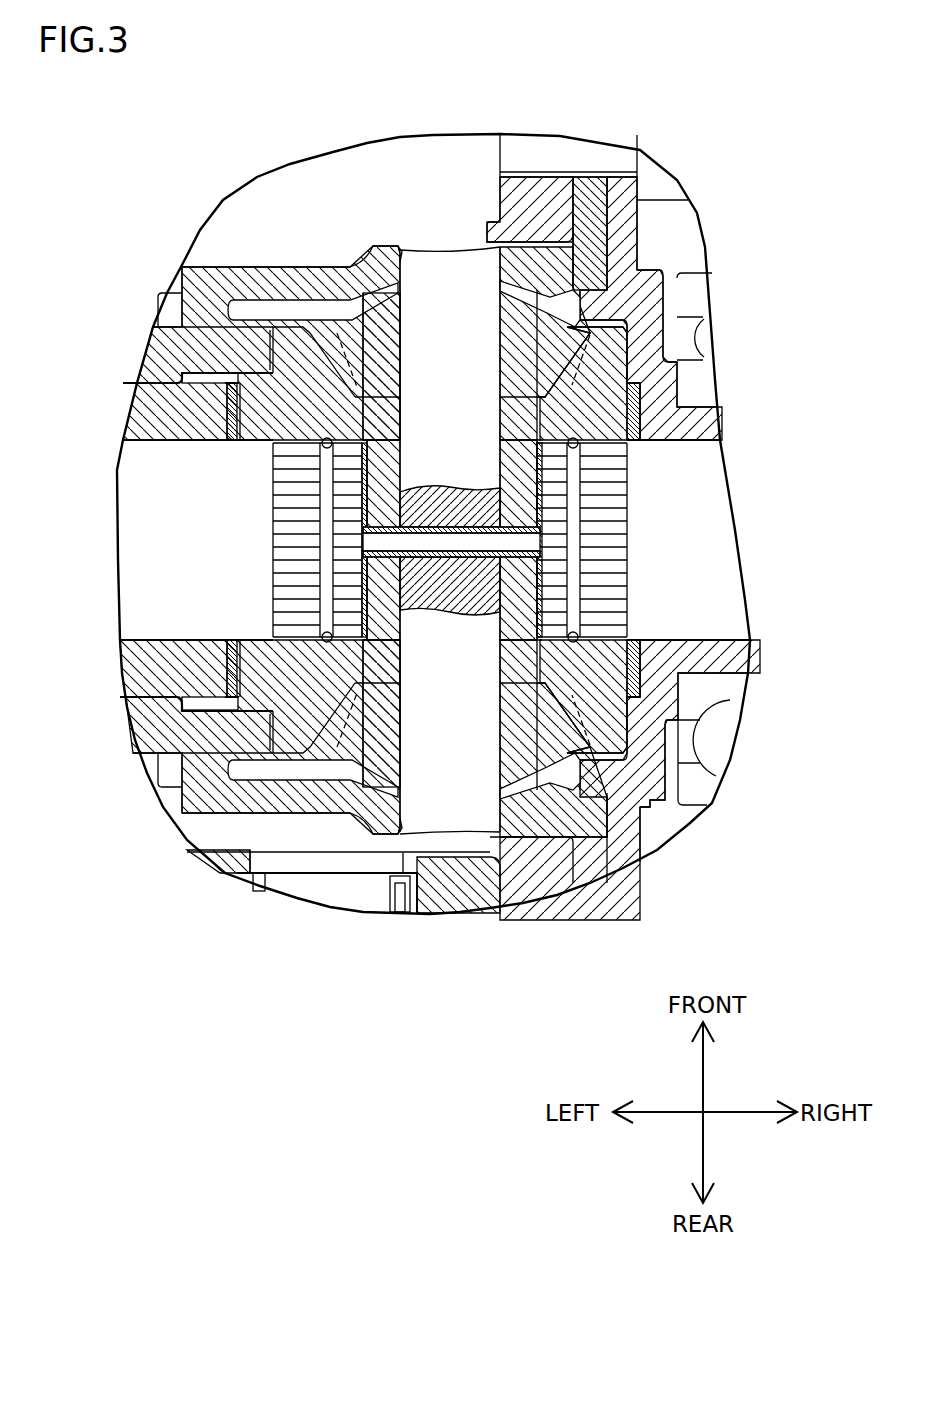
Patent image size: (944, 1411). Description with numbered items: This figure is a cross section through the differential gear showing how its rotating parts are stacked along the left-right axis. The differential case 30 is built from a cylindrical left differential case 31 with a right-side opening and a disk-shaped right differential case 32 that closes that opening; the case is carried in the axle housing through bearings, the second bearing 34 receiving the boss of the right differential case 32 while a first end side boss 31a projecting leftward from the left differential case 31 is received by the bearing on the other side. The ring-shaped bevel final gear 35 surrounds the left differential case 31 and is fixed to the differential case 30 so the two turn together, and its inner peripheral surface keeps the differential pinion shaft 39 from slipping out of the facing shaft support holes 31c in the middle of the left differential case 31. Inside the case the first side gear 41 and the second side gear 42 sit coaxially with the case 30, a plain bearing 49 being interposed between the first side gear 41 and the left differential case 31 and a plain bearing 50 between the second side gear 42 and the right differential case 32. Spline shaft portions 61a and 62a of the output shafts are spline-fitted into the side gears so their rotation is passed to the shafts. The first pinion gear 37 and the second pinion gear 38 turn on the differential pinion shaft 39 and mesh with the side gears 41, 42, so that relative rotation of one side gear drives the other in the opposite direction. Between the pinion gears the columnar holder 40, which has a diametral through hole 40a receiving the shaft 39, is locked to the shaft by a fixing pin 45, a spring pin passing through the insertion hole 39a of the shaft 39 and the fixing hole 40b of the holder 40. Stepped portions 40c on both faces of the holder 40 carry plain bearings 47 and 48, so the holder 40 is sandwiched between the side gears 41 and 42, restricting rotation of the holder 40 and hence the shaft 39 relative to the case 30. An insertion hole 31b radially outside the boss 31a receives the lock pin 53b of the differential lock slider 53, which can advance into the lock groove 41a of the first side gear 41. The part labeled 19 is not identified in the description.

The bolt 19 is at (412, 917).
The differential case 30 is at (751, 190).
The left differential case 31 is at (590, 230).
The first end side boss 31a is at (147, 400).
The insertion hole 31b is at (223, 317).
The shaft support holes 31c is at (408, 262).
The right differential case 32 is at (627, 268).
The second bearing 34 is at (700, 790).
The final gear 35 is at (537, 870).
The first pinion gear 37 is at (380, 320).
The second pinion gear 38 is at (603, 830).
The differential pinion shaft 39 is at (472, 807).
The insertion hole 39a is at (453, 547).
The holder 40 is at (515, 610).
The through hole 40a is at (400, 637).
The fixing hole 40b is at (530, 556).
The stepped portions 40c is at (498, 405).
The first side gear 41 is at (257, 353).
The lock groove 41a is at (247, 711).
The second side gear 42 is at (607, 410).
The fixing pin 45 is at (518, 537).
The plain bearing 47 is at (352, 672).
The plain bearing 48 is at (510, 694).
The plain bearing 49 is at (232, 425).
The plain bearing 50 is at (633, 443).
The differential lock slider 53 is at (170, 353).
The lock pin 53b is at (253, 400).
The spline shaft portion 61a is at (173, 573).
The spline shaft portion 62a is at (707, 580).